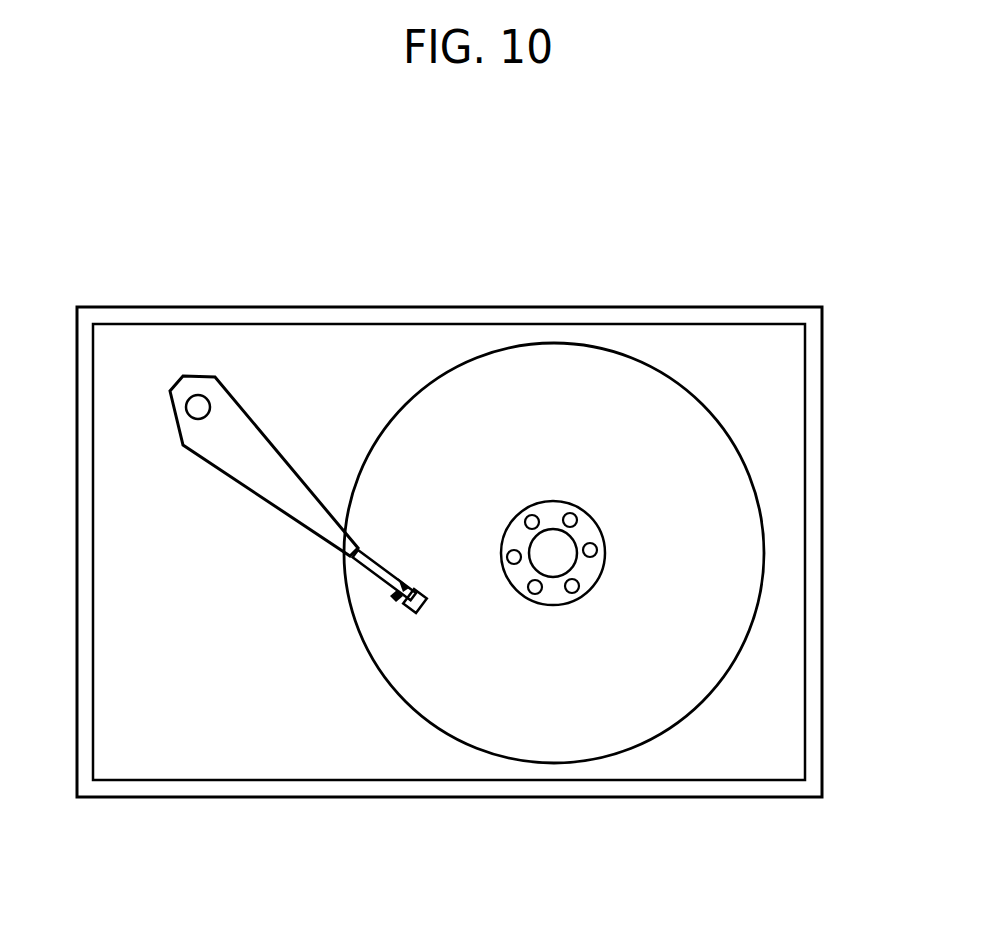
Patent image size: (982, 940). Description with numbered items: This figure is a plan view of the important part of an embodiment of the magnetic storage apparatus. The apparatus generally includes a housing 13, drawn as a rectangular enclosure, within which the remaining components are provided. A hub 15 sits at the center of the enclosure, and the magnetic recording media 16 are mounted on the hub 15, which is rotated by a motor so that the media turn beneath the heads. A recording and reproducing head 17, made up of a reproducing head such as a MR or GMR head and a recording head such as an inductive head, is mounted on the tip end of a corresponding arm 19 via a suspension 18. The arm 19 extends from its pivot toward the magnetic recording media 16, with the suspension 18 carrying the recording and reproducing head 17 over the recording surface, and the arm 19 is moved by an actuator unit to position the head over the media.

The housing 13 is at (812, 763).
The hub 15 is at (587, 528).
The magnetic recording media 16 is at (643, 373).
The recording and reproducing head 17 is at (420, 590).
The suspension 18 is at (385, 568).
The arm 19 is at (220, 468).